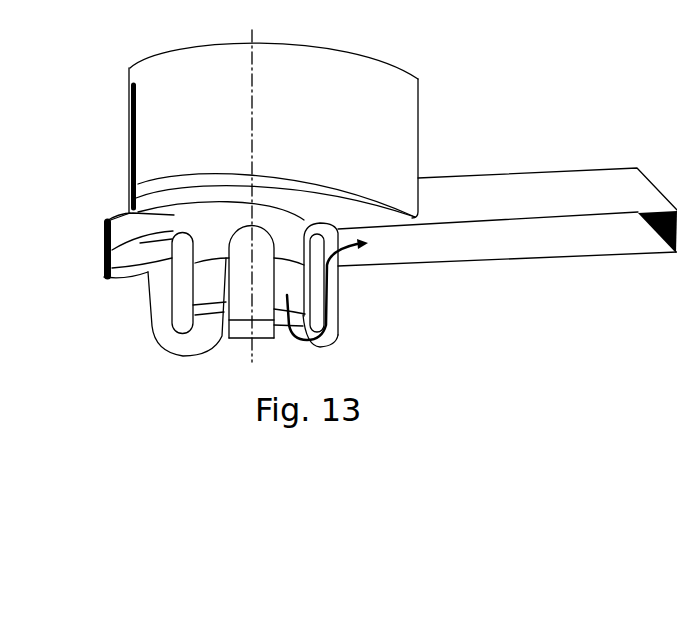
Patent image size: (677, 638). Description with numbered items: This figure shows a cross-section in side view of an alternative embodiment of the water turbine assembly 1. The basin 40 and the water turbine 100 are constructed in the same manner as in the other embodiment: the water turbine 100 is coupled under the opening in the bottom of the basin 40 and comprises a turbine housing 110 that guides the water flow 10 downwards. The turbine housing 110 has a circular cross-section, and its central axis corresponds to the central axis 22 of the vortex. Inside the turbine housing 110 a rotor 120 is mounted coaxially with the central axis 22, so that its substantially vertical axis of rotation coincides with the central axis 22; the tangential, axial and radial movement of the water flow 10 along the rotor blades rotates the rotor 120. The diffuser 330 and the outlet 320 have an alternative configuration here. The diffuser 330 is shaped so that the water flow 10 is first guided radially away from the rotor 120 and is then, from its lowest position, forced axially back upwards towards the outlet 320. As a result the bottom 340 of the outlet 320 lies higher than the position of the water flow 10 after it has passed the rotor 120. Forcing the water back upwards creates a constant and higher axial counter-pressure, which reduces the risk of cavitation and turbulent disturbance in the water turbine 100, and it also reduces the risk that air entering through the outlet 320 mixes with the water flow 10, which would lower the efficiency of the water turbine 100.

The fastening device 1 is at (88, 303).
The water flow 10 is at (340, 280).
The central axis 22 is at (248, 357).
The basin 40 is at (438, 118).
The water turbine 100 is at (178, 296).
The turbine housing 110 is at (325, 312).
The rotor 120 is at (279, 217).
The outlet 320 is at (607, 177).
The diffuser 330 is at (340, 303).
The bottom of the outlet 340 is at (512, 261).